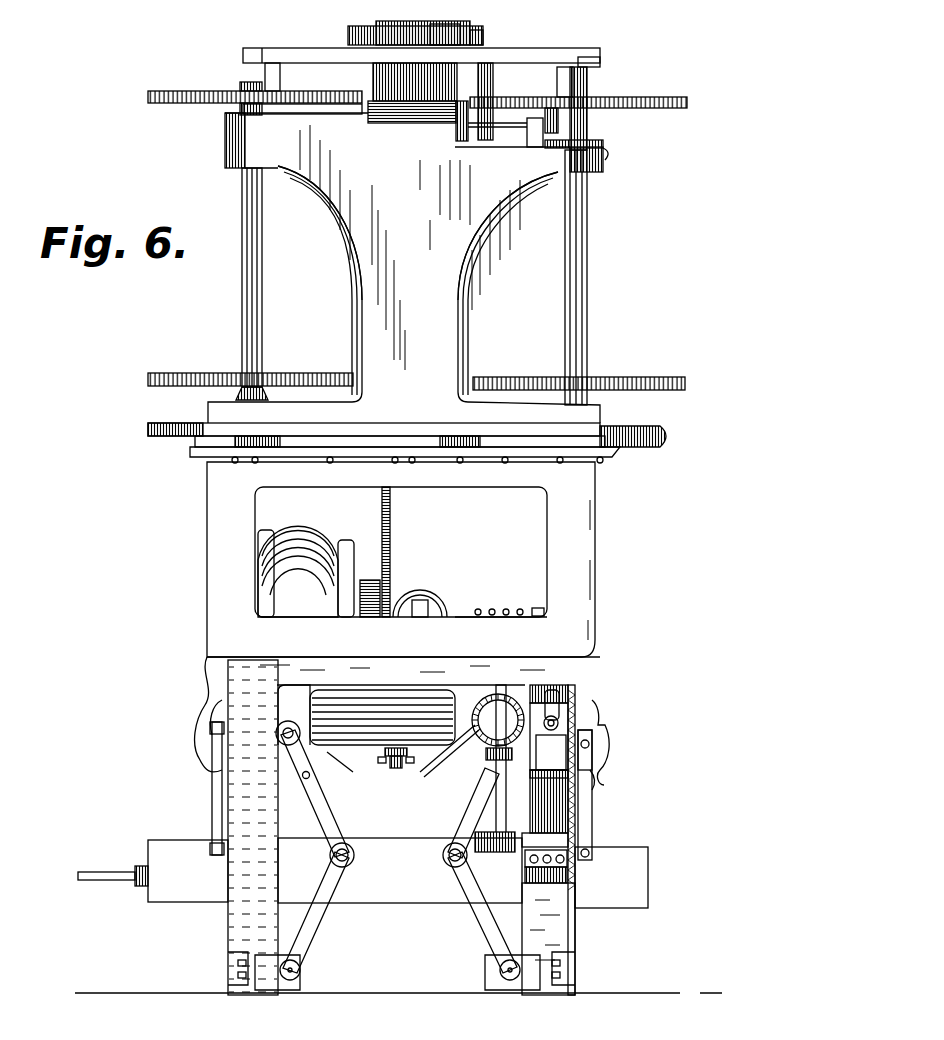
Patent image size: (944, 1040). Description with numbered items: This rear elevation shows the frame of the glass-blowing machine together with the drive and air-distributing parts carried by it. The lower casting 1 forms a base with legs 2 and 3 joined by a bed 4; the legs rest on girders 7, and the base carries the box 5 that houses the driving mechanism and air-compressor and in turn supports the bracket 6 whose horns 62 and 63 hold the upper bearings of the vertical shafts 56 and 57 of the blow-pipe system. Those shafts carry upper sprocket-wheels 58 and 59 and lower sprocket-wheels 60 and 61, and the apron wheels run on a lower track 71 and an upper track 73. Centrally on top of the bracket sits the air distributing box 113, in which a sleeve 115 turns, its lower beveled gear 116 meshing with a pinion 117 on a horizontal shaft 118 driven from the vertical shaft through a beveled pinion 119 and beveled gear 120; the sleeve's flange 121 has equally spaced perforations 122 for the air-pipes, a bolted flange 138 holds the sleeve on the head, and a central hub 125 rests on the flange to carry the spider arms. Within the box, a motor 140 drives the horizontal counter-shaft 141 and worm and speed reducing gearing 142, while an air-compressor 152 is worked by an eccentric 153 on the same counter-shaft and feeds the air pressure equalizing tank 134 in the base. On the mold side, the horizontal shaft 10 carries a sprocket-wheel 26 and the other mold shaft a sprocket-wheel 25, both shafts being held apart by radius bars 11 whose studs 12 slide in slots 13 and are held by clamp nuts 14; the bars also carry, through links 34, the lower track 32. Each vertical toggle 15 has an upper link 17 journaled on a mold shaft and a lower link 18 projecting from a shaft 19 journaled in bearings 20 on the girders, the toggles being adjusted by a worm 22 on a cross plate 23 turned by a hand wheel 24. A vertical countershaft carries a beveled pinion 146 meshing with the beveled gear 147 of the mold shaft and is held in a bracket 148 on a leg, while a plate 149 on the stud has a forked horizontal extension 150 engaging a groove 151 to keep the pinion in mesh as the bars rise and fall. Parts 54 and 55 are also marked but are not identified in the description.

The lower casting 1 is at (200, 750).
The leg 2 is at (567, 812).
The leg 3 is at (215, 850).
The bed 4 is at (403, 671).
The box 5 is at (596, 594).
The bracket 6 is at (404, 268).
The girders 7 is at (238, 965).
The horizontal shaft 10 is at (290, 720).
The radius bars 11 is at (452, 757).
The stud 12 is at (565, 716).
The slots 13 is at (580, 694).
The clamp nuts 14 is at (562, 700).
The vertical toggle 15 is at (348, 850).
The upper links 17 is at (313, 803).
The lower links 18 is at (455, 945).
The shafts 19 is at (301, 970).
The bearings 20 is at (275, 990).
The worm 22 is at (395, 770).
The cross plate 23 is at (410, 765).
The hand wheel 24 is at (375, 795).
The sprocket-wheel 25 is at (605, 726).
The sprocket-wheel 26 is at (205, 775).
The lower track 32 is at (412, 848).
The links 34 is at (212, 815).
The cross member 54 is at (400, 870).
The handle rod 55 is at (100, 870).
The vertical shaft 56 is at (588, 310).
The vertical shaft 57 is at (262, 292).
The upper sprocket-wheel 58 is at (662, 109).
The upper sprocket-wheel 59 is at (178, 104).
The lower sprocket-wheel 60 is at (655, 370).
The lower sprocket-wheel 61 is at (200, 373).
The horn 62 is at (560, 178).
The horn 63 is at (290, 172).
The track 71 is at (160, 440).
The track 73 is at (602, 62).
The air distributing box 113 is at (494, 84).
The sleeve 115 is at (415, 64).
The beveled gear 116 is at (395, 124).
The pinion 117 is at (465, 138).
The horizontal shaft 118 is at (505, 130).
The beveled pinion 119 is at (560, 120).
The beveled gear 120 is at (604, 160).
The flange 121 is at (490, 42).
The perforations 122 is at (420, 30).
The central hub 125 is at (483, 38).
The air pressure equalizing tank 134 is at (382, 717).
The bolted flange 138 is at (470, 20).
The motor 140 is at (310, 530).
The horizontal counter-shaft 141 is at (374, 578).
The worm and speed reducing gearing 142 is at (490, 605).
The beveled pinion 146 is at (490, 760).
The beveled gear 147 is at (486, 754).
The bracket 148 is at (548, 840).
The plate 149 is at (594, 750).
The forked horizontal extension 150 is at (560, 782).
The groove 151 is at (596, 778).
The air-compressor 152 is at (432, 590).
The eccentric 153 is at (408, 560).